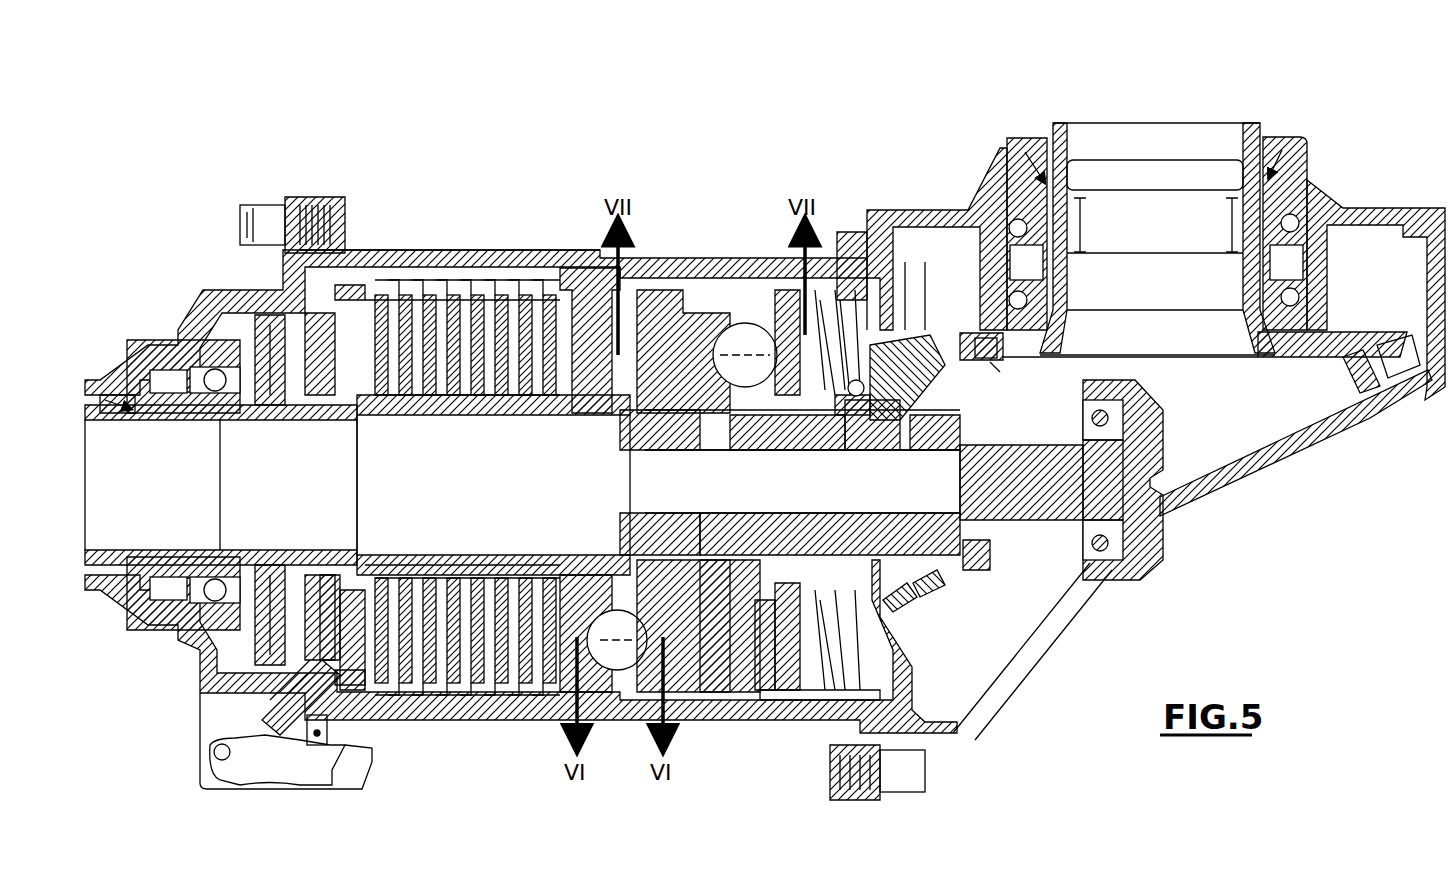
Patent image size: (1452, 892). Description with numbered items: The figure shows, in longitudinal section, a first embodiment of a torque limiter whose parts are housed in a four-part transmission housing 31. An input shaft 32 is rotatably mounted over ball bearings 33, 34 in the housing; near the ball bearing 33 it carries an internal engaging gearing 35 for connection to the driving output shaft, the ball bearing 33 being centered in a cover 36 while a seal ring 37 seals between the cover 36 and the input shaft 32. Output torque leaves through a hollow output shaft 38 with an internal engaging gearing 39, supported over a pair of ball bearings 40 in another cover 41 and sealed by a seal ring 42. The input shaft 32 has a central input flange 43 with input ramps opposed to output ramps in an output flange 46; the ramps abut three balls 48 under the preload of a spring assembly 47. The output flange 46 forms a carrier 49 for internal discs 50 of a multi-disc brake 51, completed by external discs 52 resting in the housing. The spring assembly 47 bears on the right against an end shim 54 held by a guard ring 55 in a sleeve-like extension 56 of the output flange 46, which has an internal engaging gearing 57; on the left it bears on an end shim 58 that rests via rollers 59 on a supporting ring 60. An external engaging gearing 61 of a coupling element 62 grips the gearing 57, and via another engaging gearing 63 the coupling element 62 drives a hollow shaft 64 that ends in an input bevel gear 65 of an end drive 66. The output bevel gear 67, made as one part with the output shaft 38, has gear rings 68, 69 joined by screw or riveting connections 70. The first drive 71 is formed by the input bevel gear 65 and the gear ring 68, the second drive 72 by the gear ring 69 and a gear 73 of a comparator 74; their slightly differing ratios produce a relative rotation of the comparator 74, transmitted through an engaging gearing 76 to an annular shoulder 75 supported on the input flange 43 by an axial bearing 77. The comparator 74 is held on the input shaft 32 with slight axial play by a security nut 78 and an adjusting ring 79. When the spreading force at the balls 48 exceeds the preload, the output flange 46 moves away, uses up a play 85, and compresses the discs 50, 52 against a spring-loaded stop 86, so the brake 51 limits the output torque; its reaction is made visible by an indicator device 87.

The transmission housing 31 is at (530, 250).
The input shaft 32 is at (423, 415).
The ball bearing 33 is at (240, 420).
The ball bearing 34 is at (1125, 548).
The internal engaging gearing 35 is at (150, 430).
The cover 36 is at (145, 362).
The seal ring 37 is at (125, 603).
The output shaft 38 is at (1070, 226).
The internal engaging gearing 39 is at (1232, 226).
The pair of ball bearings 40 is at (1327, 265).
The cover 41 is at (947, 210).
The seal ring 42 is at (1275, 152).
The input flange 43 is at (660, 300).
The output flange 46 is at (600, 258).
The spring assembly 47 is at (815, 740).
The balls 48 is at (620, 600).
The carrier 49 is at (495, 400).
The internal discs 50 is at (490, 585).
The multi-disc brake 51 is at (480, 173).
The external discs 52 is at (530, 288).
The end shim 54 is at (883, 215).
The guard ring 55 is at (918, 258).
The sleeve-like extension 56 is at (752, 285).
The internal engaging gearing 57 is at (845, 270).
The end shim 58 is at (808, 700).
The rollers 59 is at (765, 700).
The supporting ring 60 is at (752, 700).
The external engaging gearing 61 is at (735, 325).
The coupling element 62 is at (735, 560).
The engaging gearing 63 is at (762, 440).
The hollow shaft 64 is at (845, 440).
The input bevel gear 65 is at (905, 340).
The end drive 66 is at (1012, 372).
The output bevel gear 67 is at (1265, 352).
The gear ring 68 is at (1400, 385).
The gear ring 69 is at (1395, 410).
The screw or riveting connections 70 is at (1000, 345).
The first drive 71 is at (905, 600).
The second drive 72 is at (942, 585).
The gear 73 is at (885, 432).
The comparator 74 is at (848, 442).
The annular shoulder 75 is at (628, 418).
The engaging gearing 76 is at (645, 483).
The axial bearing 77 is at (650, 448).
The security nut 78 is at (992, 557).
The adjusting ring 79 is at (932, 450).
The play 85 is at (365, 590).
The spring-loaded stop 86 is at (330, 578).
The indicator device 87 is at (380, 762).